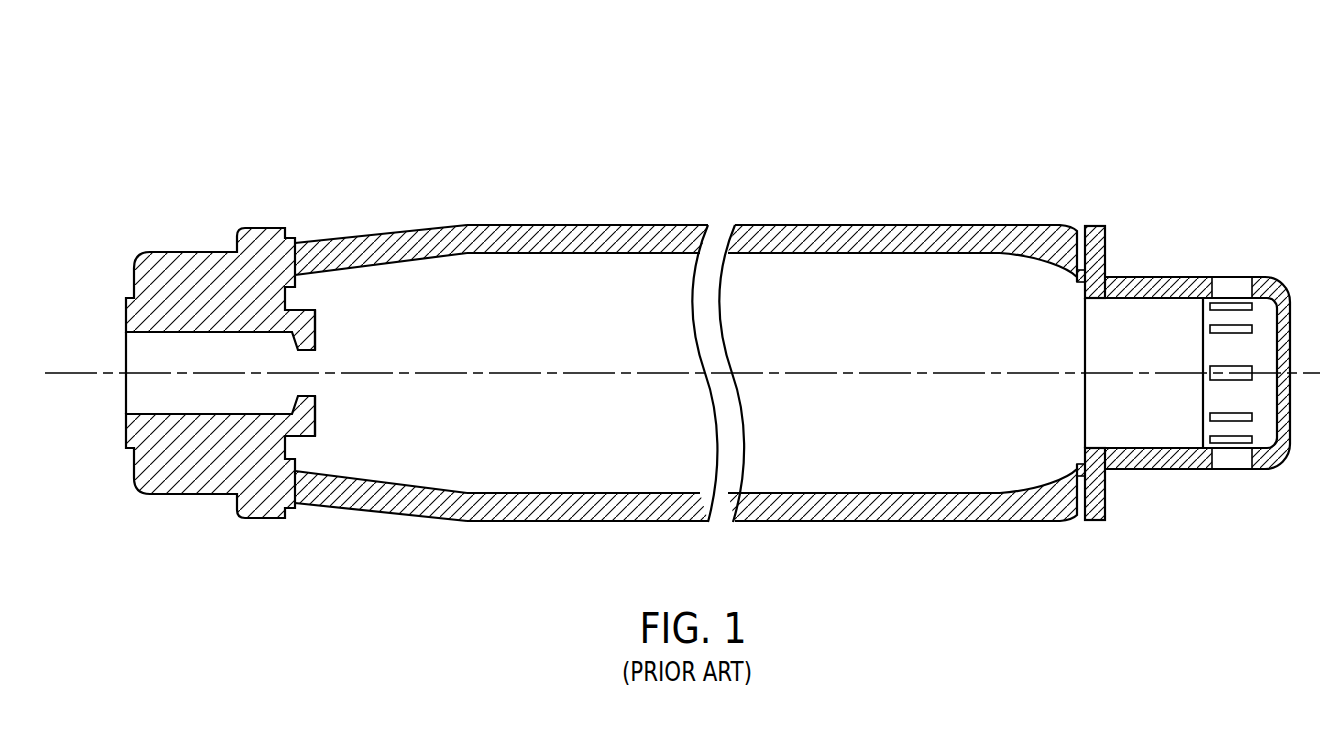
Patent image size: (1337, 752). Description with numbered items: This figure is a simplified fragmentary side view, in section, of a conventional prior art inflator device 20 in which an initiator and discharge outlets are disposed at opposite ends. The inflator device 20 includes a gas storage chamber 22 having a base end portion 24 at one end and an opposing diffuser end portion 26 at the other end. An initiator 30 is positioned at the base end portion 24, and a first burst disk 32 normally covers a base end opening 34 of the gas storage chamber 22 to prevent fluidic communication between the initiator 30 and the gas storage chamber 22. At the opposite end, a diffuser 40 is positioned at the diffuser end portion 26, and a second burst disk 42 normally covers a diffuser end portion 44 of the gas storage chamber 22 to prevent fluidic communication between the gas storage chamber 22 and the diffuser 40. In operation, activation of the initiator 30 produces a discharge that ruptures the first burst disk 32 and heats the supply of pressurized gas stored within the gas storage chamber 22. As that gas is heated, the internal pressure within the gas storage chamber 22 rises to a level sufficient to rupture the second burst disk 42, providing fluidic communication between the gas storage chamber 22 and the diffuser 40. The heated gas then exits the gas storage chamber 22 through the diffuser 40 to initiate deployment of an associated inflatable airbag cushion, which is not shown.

The inflator device 20 is at (722, 153).
The gas storage chamber 22 is at (555, 273).
The base end portion 24 is at (322, 253).
The diffuser end portion 26 is at (1055, 245).
The initiator 30 is at (143, 352).
The first burst disk 32 is at (315, 363).
The base end opening 34 is at (313, 382).
The diffuser 40 is at (1200, 277).
The second burst disk 42 is at (1085, 333).
The diffuser end portion 44 is at (1100, 450).